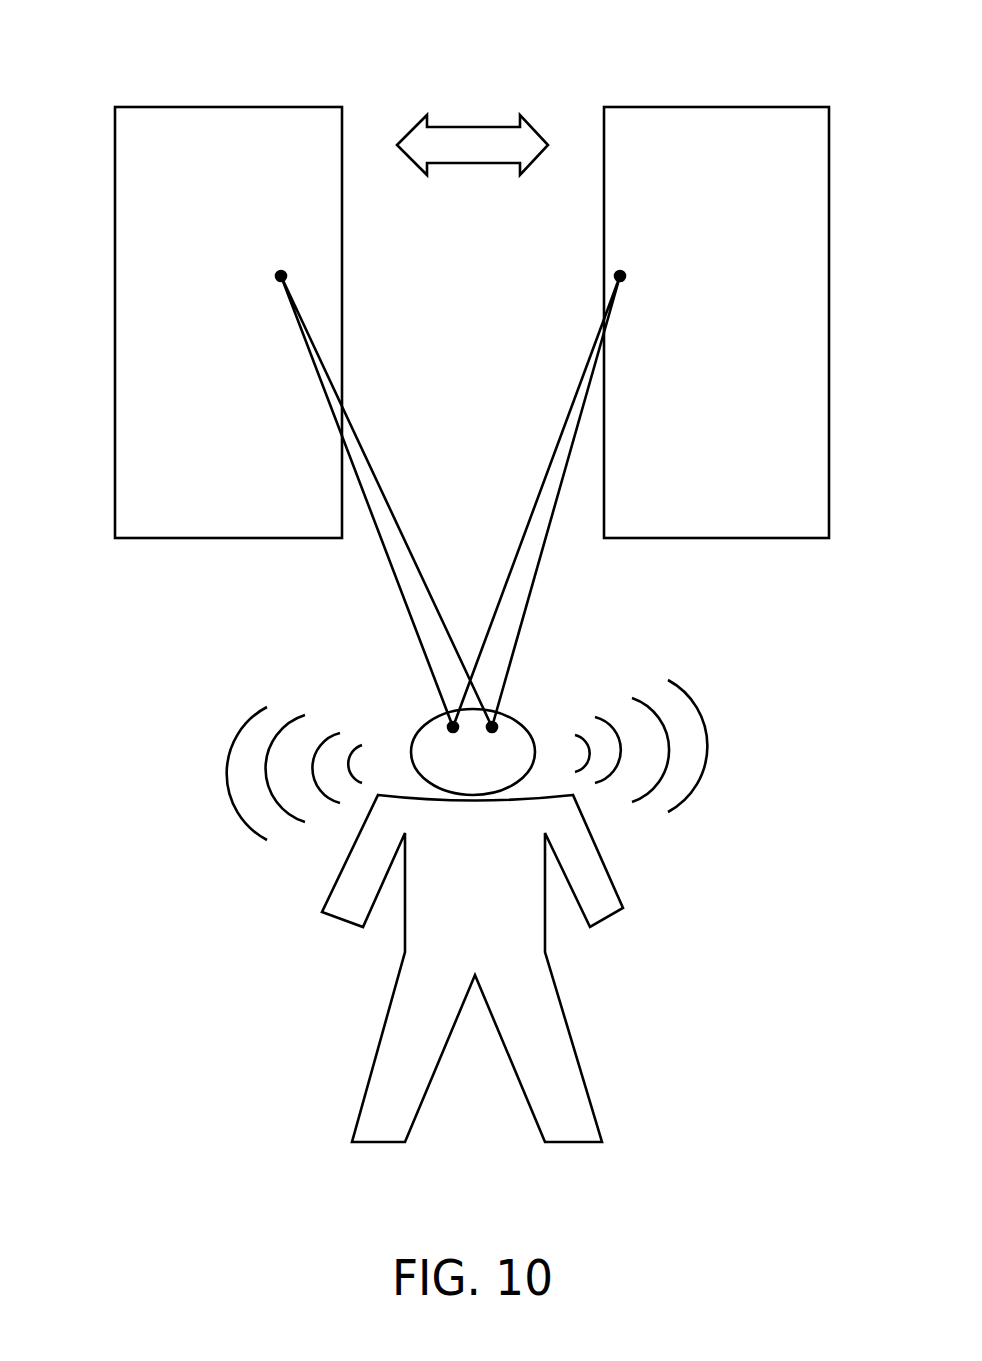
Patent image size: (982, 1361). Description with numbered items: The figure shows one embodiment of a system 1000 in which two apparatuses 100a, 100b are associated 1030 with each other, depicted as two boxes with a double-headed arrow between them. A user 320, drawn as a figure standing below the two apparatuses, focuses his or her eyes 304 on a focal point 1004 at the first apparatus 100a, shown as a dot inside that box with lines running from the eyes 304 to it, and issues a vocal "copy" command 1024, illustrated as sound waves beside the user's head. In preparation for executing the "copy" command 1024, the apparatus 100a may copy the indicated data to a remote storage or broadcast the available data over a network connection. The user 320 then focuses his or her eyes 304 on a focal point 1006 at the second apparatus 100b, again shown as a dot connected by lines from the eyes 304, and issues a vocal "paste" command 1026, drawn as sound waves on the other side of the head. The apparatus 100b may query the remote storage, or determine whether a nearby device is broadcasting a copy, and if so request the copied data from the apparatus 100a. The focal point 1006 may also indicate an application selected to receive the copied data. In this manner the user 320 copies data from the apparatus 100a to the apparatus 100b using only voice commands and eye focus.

The system 1000 is at (106, 52).
The apparatus 100a is at (257, 348).
The apparatus 100b is at (744, 349).
The focal point 1004 is at (278, 258).
The focal point 1006 is at (631, 262).
The association 1030 is at (468, 199).
The eyes 304 is at (506, 716).
The user 320 is at (472, 940).
The copy command 1024 is at (164, 753).
The paste command 1026 is at (753, 775).